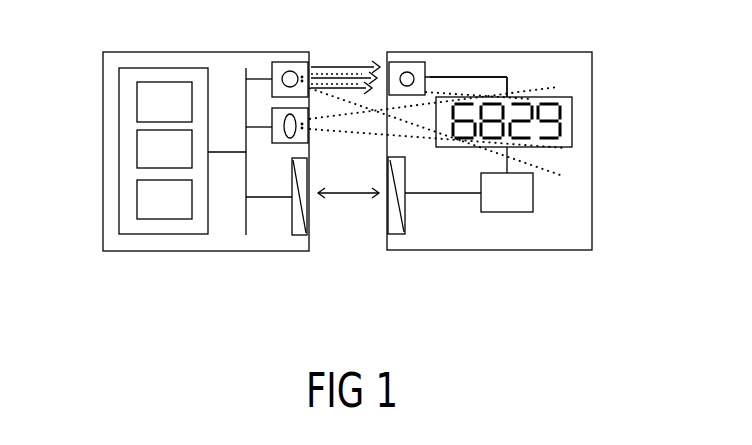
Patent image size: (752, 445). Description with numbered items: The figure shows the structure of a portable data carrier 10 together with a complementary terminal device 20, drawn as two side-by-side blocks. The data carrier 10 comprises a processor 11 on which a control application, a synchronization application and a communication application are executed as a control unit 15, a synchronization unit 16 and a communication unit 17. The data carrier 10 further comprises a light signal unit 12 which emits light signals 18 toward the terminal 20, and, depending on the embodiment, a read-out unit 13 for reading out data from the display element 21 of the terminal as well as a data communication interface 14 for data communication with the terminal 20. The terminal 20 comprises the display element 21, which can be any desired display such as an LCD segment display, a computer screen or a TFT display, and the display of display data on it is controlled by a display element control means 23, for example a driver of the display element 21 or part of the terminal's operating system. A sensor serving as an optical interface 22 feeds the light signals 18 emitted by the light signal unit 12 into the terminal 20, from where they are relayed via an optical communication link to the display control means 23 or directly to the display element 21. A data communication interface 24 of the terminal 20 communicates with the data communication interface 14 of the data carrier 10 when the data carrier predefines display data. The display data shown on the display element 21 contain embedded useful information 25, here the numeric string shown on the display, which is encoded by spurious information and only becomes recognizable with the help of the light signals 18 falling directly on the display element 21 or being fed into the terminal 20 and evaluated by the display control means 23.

The portable data carrier 10 is at (228, 52).
The processor 11 is at (155, 68).
The light signal unit 12 is at (283, 62).
The read-out unit 13 is at (283, 143).
The data communication interface 14 is at (302, 235).
The control unit 15 is at (137, 101).
The synchronization unit 16 is at (137, 151).
The communication unit 17 is at (137, 201).
The light signals 18 is at (360, 97).
The terminal device 20 is at (470, 52).
The display element 21 is at (532, 95).
The optical interface 22 is at (410, 62).
The display element control means 23 is at (533, 193).
The data communication interface 24 is at (390, 237).
The useful information 25 is at (562, 120).